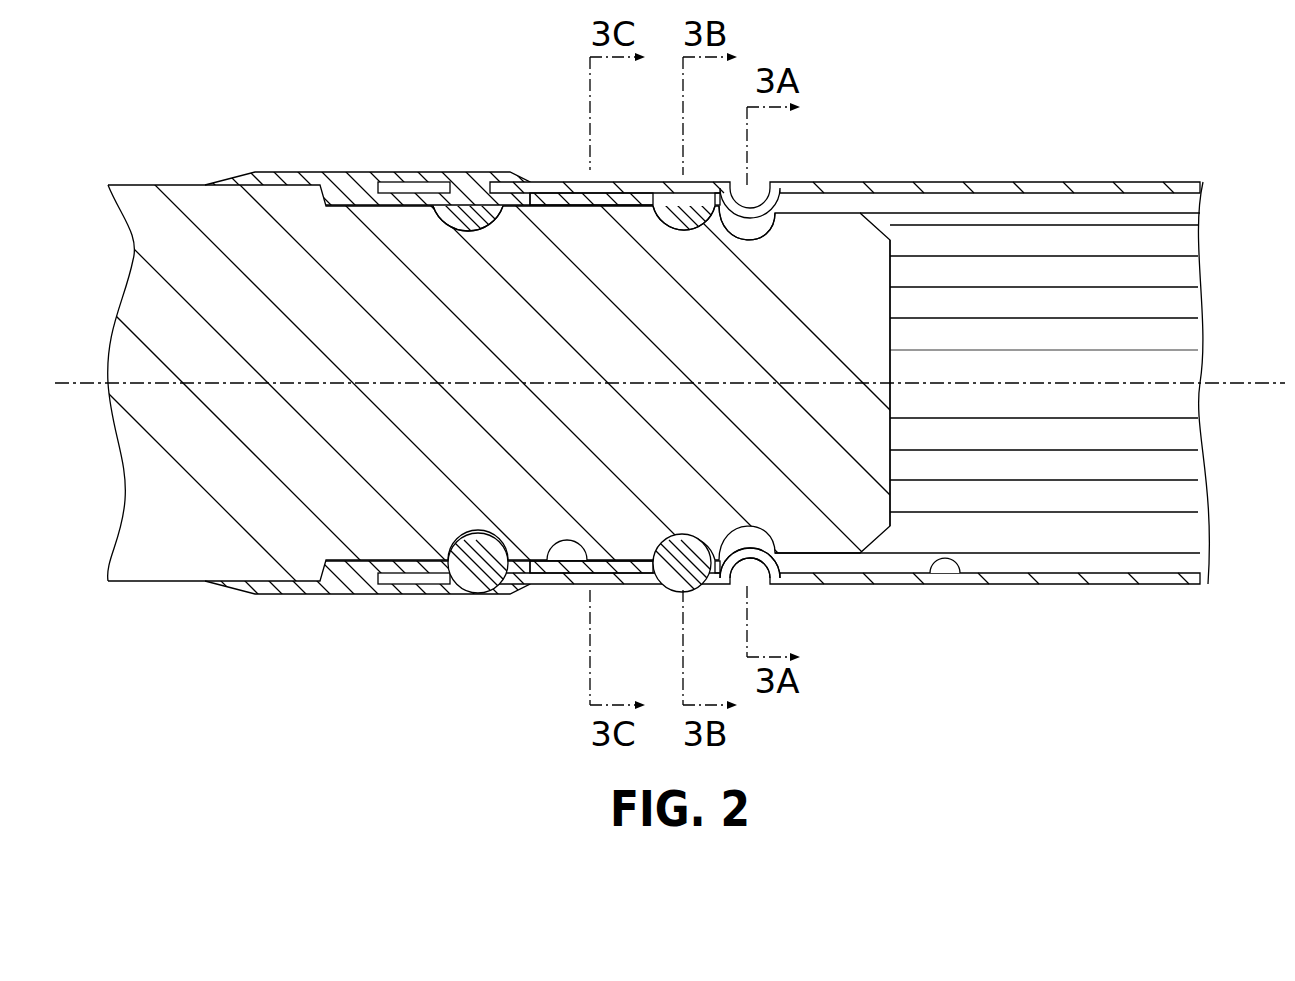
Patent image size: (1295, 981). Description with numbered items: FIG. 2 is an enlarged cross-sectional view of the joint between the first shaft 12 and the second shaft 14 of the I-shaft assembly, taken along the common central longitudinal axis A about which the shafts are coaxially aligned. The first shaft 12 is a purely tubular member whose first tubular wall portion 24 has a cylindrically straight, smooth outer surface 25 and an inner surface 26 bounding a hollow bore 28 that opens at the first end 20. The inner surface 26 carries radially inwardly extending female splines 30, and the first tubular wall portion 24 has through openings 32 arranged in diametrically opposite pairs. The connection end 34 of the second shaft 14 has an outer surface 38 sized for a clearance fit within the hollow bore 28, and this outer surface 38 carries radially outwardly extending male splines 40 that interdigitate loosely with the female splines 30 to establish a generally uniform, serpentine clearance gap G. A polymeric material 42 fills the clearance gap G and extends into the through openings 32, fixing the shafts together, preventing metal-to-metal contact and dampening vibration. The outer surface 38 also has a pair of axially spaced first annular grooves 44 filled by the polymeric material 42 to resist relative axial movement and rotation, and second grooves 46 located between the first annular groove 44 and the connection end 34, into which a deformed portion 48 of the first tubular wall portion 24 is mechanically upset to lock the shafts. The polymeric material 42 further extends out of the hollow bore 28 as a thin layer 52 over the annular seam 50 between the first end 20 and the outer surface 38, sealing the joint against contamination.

The first shaft 12 is at (845, 610).
The second shaft 14 is at (134, 436).
The first end 20 is at (414, 140).
The first tubular wall portion 24 is at (845, 145).
The outer surface 25 is at (1160, 341).
The inner surface 26 is at (932, 608).
The hollow bore 28 is at (556, 404).
The female splines 30 is at (873, 440).
The through opening 32 is at (585, 577).
The connection end 34 is at (1044, 320).
The outer surface 38 is at (817, 605).
The male splines 40 is at (601, 154).
The polymeric material 42 is at (632, 388).
The first annular groove 44 is at (544, 245).
The second groove 46 is at (766, 250).
The deformed portion 48 is at (750, 600).
The seam 50 is at (376, 148).
The thin layer 52 is at (376, 619).
The clearance gap G is at (591, 383).
The central longitudinal axis A is at (670, 434).